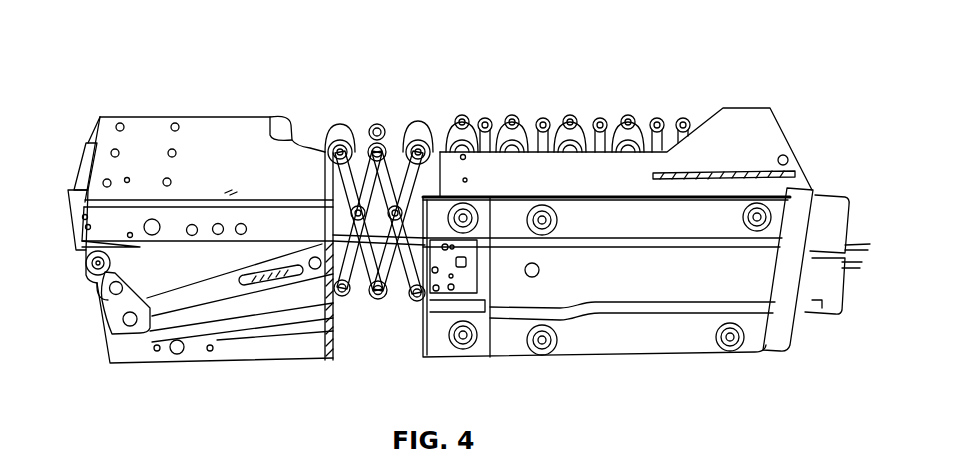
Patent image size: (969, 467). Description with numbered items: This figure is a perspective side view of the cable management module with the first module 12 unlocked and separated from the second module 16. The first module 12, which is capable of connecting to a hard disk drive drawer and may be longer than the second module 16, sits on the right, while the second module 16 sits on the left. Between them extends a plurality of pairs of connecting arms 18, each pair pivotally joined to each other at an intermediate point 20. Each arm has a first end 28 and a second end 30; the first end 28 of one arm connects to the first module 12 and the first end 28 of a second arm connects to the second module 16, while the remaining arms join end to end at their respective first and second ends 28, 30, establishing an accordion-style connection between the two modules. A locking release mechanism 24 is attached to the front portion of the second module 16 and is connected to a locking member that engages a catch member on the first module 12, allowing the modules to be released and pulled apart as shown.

The first module 12 is at (742, 284).
The second module 16 is at (107, 300).
The connecting arms 18 is at (424, 140).
The intermediate point 20 is at (365, 150).
The locking release mechanism 24 is at (68, 215).
The first end 28 is at (418, 127).
The second end 30 is at (378, 300).